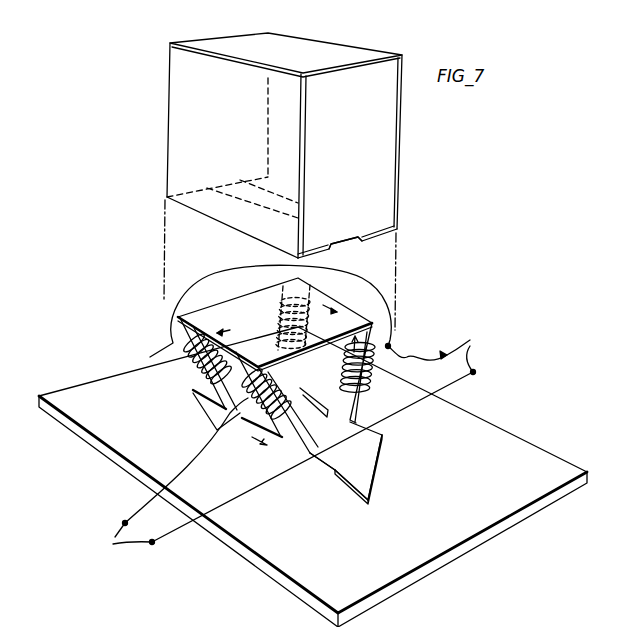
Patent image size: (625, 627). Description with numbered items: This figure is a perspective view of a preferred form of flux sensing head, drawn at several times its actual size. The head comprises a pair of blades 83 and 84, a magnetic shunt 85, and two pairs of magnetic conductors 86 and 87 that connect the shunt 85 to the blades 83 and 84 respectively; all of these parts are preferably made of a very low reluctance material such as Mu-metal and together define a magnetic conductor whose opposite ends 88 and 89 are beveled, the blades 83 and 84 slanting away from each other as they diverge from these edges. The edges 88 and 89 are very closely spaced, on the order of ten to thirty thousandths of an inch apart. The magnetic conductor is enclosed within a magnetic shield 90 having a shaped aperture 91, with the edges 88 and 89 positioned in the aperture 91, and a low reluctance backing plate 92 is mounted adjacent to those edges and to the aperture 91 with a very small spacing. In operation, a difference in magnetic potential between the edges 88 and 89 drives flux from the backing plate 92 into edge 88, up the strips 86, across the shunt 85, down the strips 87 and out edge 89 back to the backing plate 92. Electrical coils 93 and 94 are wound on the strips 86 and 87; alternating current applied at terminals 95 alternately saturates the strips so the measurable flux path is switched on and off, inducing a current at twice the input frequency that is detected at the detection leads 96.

The blade 83 is at (340, 498).
The blade 84 is at (305, 456).
The magnetic shunt 85 is at (205, 312).
The magnetic conductor 86 is at (243, 440).
The magnetic conductor 87 is at (290, 298).
The end 88 is at (302, 483).
The end 89 is at (368, 506).
The magnetic shield 90 is at (302, 181).
The shaped aperture 91 is at (334, 243).
The backing plate 92 is at (420, 572).
The electrical coil 93 is at (246, 360).
The electrical coil 94 is at (310, 284).
The terminals 95 is at (282, 463).
The detection leads 96 is at (321, 319).